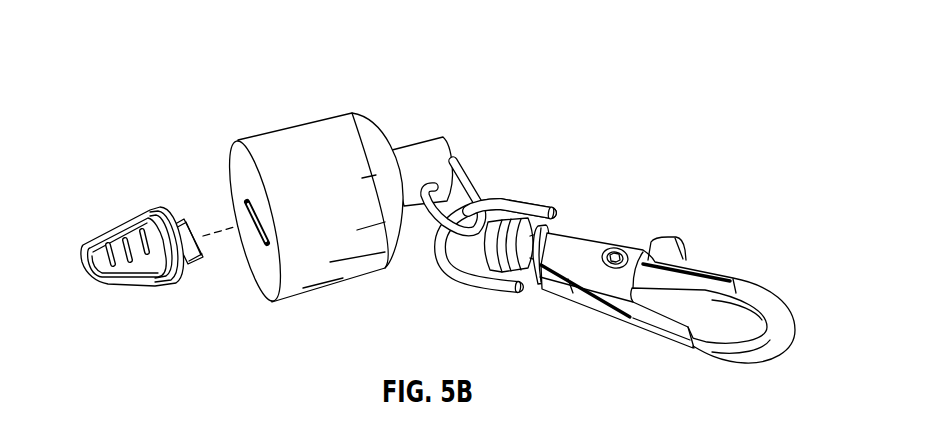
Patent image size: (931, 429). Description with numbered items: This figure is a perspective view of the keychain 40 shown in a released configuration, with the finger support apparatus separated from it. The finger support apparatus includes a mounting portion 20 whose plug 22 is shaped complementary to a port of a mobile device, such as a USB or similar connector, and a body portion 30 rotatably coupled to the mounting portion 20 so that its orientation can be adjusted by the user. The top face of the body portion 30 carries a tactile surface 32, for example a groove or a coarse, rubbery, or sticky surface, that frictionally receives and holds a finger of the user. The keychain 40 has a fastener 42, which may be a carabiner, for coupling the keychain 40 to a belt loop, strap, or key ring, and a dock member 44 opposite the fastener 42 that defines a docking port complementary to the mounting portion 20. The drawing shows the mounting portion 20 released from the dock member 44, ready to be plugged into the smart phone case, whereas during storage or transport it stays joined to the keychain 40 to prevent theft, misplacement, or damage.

The mounting portion 20 is at (154, 272).
The plug 22 is at (186, 238).
The body portion 30 is at (132, 275).
The tactile surface 32 is at (113, 246).
The keychain 40 is at (490, 169).
The fastener 42 is at (742, 297).
The dock member 44 is at (293, 140).